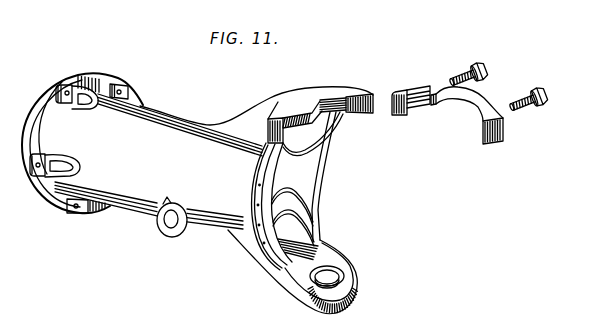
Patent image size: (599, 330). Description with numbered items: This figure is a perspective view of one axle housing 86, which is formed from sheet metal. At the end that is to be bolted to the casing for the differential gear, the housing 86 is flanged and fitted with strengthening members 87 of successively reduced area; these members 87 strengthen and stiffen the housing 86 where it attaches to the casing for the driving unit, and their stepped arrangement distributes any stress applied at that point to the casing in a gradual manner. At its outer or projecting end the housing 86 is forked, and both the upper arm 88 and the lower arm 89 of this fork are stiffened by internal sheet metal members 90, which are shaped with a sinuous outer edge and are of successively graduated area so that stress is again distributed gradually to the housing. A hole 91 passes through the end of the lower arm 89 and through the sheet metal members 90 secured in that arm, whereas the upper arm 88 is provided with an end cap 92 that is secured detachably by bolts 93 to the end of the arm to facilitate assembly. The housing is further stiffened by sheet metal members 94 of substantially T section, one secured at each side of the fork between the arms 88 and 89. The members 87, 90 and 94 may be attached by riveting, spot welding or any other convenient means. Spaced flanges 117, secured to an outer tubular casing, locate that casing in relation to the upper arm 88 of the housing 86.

The housing 86 is at (177, 138).
The strengthening members 87 is at (84, 122).
The upper arm 88 is at (303, 97).
The lower arm 89 is at (293, 290).
The internal sheet metal members 90 is at (320, 138).
The hole 91 is at (341, 272).
The end cap 92 is at (467, 104).
The bolts 93 is at (535, 90).
The sheet metal members 94 is at (250, 180).
The spaced flanges 117 is at (392, 103).